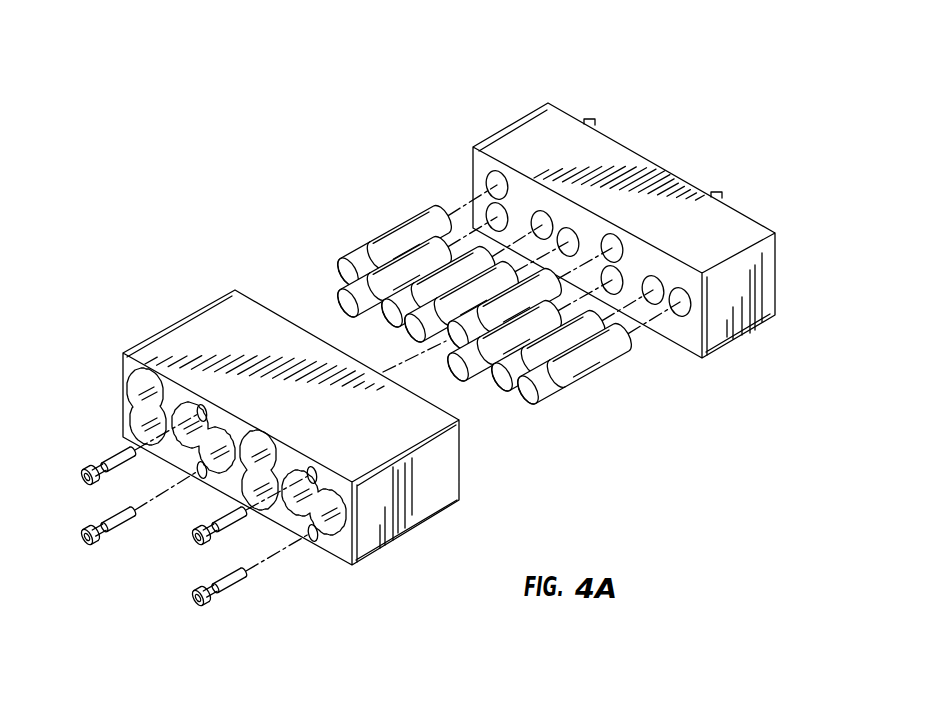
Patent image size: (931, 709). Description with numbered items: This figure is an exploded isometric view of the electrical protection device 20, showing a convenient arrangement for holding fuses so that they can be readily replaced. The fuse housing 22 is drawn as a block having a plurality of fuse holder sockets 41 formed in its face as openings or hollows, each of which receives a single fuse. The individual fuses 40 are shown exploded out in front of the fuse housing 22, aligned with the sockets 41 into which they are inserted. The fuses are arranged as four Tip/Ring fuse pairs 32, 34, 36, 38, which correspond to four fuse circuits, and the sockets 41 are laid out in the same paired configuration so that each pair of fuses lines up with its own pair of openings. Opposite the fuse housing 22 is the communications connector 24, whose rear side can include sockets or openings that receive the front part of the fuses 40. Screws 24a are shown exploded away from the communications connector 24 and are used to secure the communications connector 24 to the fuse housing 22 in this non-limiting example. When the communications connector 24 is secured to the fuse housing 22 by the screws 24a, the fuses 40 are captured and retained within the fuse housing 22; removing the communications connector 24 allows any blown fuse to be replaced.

The electrical protection device 20 is at (452, 357).
The fuse housing 22 is at (649, 230).
The communications connector 24 is at (437, 507).
The screws 24a is at (207, 601).
The Tip/Ring fuse pair 32 is at (327, 278).
The Tip/Ring fuse pair 34 is at (388, 338).
The Tip/Ring fuse pair 36 is at (443, 354).
The Tip/Ring fuse pair 38 is at (519, 410).
The fuses 40 is at (648, 380).
The fuse holder sockets 41 is at (684, 302).